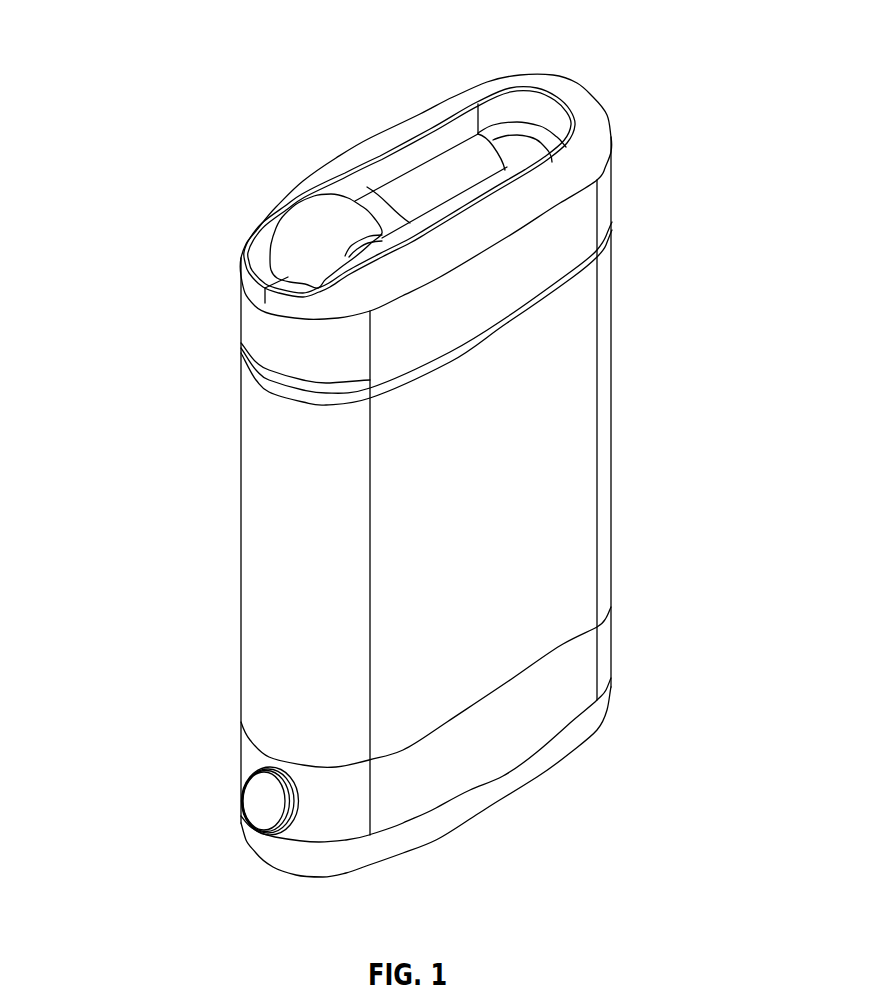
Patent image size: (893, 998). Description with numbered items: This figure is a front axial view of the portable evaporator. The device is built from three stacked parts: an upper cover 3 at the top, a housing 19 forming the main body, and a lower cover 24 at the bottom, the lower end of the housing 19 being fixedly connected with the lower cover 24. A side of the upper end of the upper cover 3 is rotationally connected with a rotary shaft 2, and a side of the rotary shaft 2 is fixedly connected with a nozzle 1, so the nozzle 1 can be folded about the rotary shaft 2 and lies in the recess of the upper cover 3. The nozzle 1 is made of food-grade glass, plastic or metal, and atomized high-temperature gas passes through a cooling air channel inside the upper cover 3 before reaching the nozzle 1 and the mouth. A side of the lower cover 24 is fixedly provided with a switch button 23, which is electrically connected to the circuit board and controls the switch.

The nozzle 1 is at (463, 173).
The rotary shaft 2 is at (318, 230).
The upper cover 3 is at (517, 262).
The housing 19 is at (535, 517).
The switch button 23 is at (261, 803).
The lower cover 24 is at (483, 748).